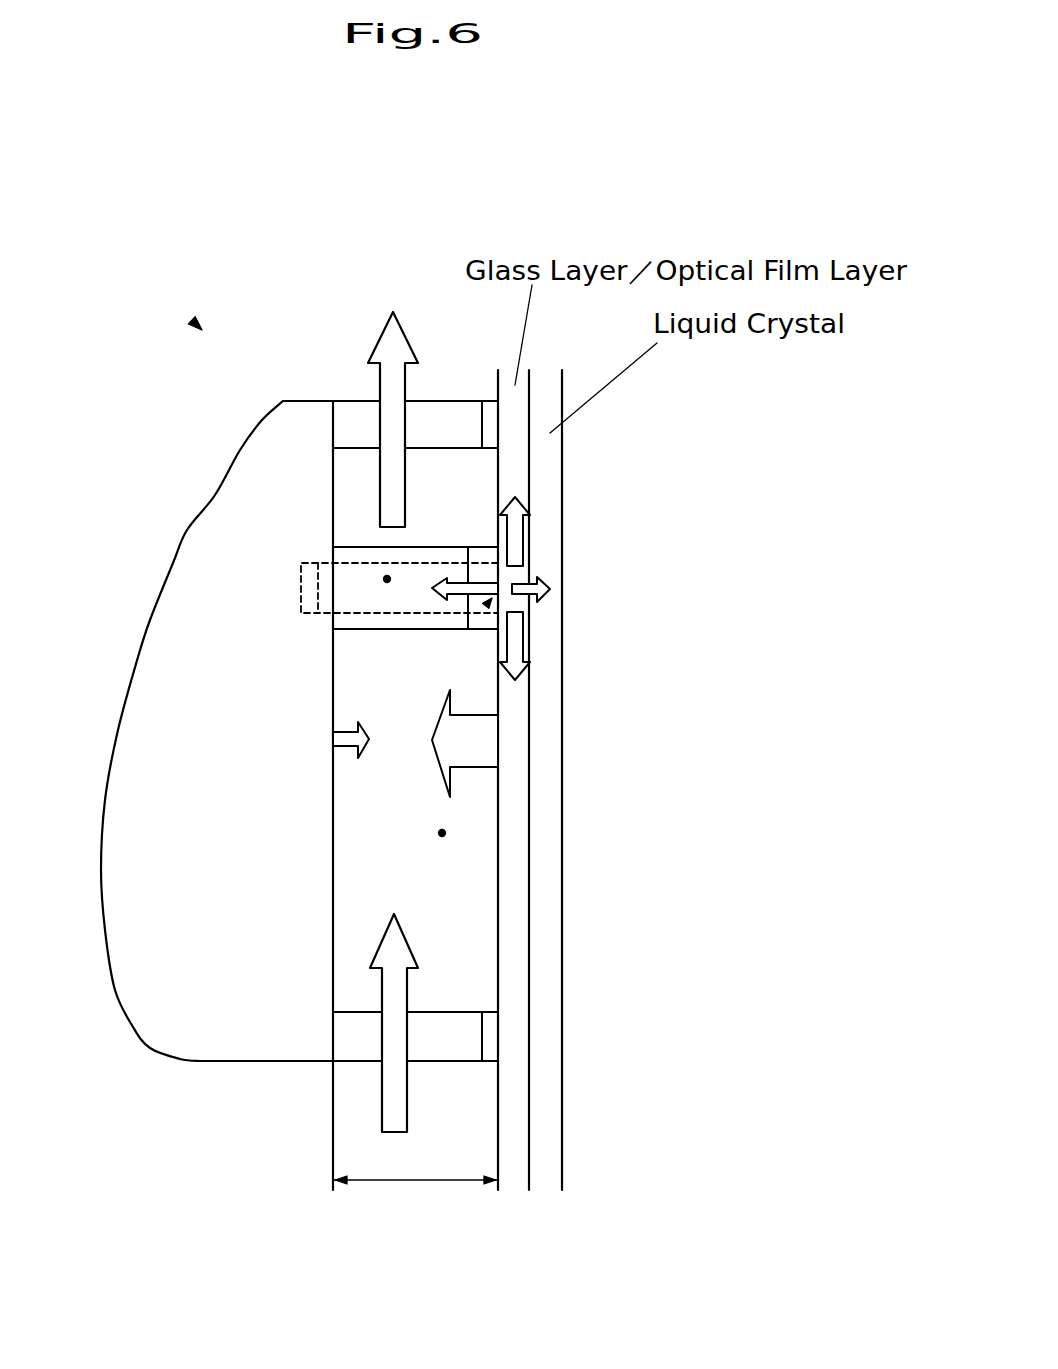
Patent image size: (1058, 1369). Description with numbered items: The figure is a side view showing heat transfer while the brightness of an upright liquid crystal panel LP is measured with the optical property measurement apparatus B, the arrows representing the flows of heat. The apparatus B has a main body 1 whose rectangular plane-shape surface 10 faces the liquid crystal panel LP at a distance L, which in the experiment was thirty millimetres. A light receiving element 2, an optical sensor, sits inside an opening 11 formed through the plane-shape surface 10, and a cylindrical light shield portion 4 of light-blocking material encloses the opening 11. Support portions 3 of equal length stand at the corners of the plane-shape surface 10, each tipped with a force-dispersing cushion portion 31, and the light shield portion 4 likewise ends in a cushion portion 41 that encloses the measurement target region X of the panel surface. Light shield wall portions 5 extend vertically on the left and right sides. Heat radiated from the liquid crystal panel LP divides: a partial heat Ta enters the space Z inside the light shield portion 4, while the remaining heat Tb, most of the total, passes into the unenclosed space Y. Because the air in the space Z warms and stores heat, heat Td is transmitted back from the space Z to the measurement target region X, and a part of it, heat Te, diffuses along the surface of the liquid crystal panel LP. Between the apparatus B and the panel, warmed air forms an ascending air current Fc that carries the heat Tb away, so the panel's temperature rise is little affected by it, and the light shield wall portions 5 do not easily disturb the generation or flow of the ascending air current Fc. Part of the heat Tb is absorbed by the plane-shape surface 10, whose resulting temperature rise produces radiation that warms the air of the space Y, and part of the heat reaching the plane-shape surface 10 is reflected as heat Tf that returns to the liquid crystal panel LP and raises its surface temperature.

The main body 1 is at (197, 655).
The light receiving element 2 is at (302, 590).
The support portion 3 is at (347, 418).
The light shield portion 4 is at (360, 545).
The light shield wall portion 5 is at (483, 807).
The plane-shape surface 10 is at (340, 854).
The opening 11 is at (320, 563).
The cushion portion 31 is at (490, 415).
The cushion portion 41 is at (482, 545).
The optical property measurement apparatus B is at (195, 323).
The ascending air current Fc is at (390, 345).
The heat Te is at (522, 528).
The heat Td is at (543, 595).
The heat Ta is at (463, 590).
The heat Tb is at (465, 743).
The heat Tf is at (343, 740).
The measurement target region X is at (490, 600).
The space Y is at (442, 833).
The space Z is at (387, 579).
The distance L is at (415, 1199).
The liquid crystal panel LP is at (562, 460).